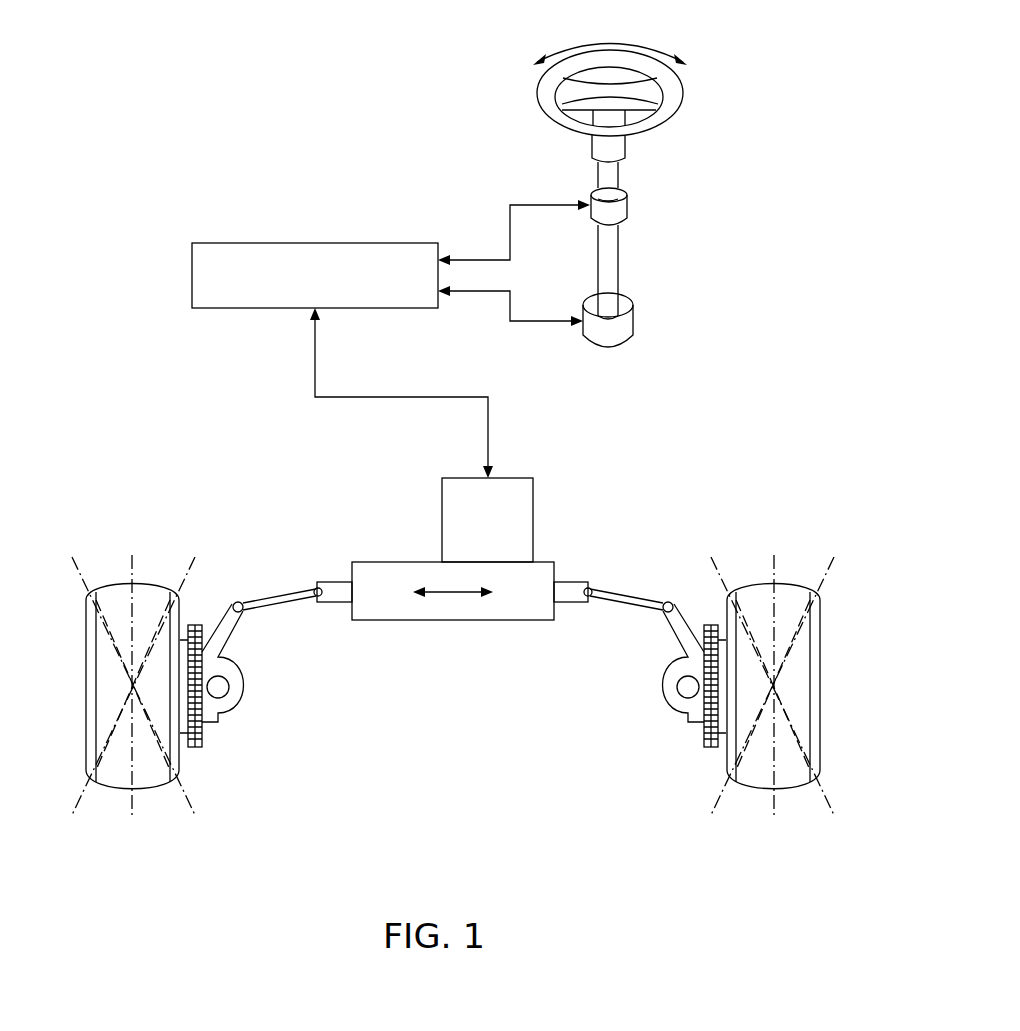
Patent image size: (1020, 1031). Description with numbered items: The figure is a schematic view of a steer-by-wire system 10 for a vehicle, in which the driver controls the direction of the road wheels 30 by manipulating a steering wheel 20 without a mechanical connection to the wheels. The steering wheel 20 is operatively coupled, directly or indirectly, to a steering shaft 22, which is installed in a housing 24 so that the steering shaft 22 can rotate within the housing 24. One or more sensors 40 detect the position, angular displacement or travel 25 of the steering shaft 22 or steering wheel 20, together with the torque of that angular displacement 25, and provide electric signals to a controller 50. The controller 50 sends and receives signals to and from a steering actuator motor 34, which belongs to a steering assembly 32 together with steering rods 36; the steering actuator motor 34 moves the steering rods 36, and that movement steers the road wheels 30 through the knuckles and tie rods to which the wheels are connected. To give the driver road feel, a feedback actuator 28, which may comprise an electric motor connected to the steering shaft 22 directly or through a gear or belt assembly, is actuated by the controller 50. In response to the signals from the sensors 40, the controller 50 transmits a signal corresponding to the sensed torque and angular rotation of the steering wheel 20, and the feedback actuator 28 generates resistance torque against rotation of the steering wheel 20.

The steer-by-wire system 10 is at (780, 265).
The steering wheel 20 is at (682, 96).
The steering shaft 22 is at (615, 180).
The housing 24 is at (620, 145).
The angular displacement 25 is at (640, 41).
The feedback actuator 28 is at (625, 332).
The road wheels 30 is at (172, 752).
The steering assembly 32 is at (469, 613).
The steering actuator motor 34 is at (533, 518).
The steering rods 36 is at (336, 598).
The sensors 40 is at (618, 212).
The controller 50 is at (268, 310).